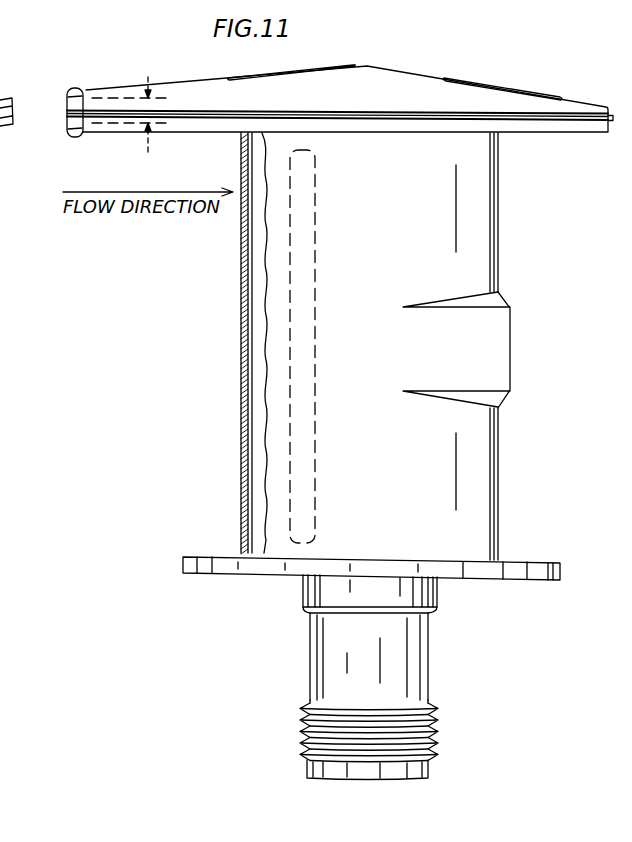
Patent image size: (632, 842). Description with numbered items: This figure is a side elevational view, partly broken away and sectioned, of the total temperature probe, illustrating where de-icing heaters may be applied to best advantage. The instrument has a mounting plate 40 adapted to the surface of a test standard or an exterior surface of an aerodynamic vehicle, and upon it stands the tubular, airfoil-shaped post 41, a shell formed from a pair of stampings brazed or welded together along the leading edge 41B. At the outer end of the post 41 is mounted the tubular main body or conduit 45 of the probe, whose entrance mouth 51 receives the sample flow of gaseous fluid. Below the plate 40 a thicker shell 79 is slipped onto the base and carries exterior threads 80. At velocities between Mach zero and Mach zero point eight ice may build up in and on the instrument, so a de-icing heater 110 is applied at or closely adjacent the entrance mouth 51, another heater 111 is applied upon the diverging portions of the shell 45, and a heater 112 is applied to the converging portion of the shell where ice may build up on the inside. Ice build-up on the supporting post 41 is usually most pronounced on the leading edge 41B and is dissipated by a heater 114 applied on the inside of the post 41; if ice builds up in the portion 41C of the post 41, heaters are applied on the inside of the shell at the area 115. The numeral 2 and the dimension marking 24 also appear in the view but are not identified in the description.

The adjacent figure fragment 2 is at (6, 226).
The thickness dimension 24 is at (150, 105).
The mounting plate 40 is at (222, 562).
The post 41 is at (400, 265).
The leading edge 41B is at (242, 350).
The portion of the tube 41C is at (386, 221).
The tubular main body 45 is at (374, 63).
The entrance mouth 51 is at (66, 126).
The thicker shell 79 is at (308, 649).
The exterior threads 80 is at (302, 727).
The de-icing heater 110 is at (77, 90).
The heater 111 is at (229, 77).
The heater 112 is at (519, 87).
The heater 114 is at (250, 262).
The heater area 115 is at (303, 419).